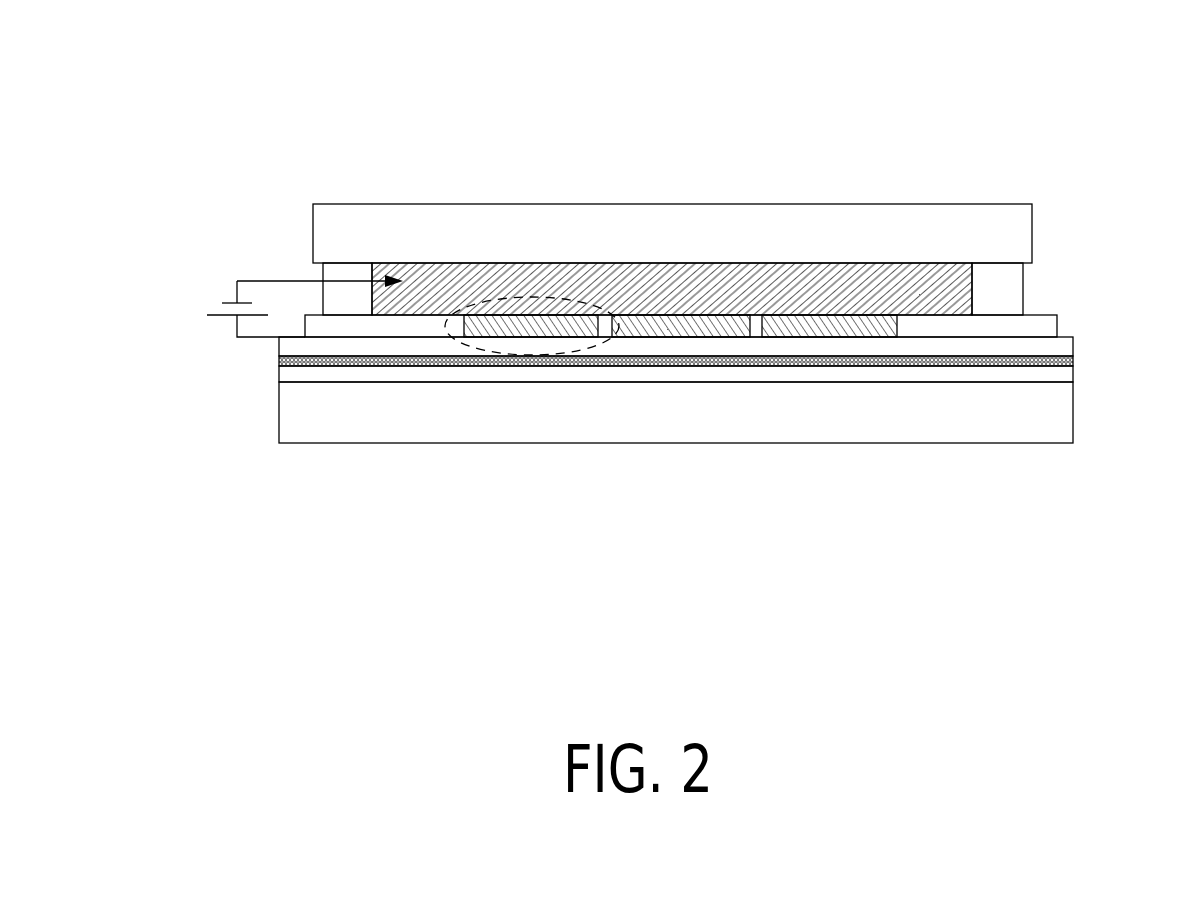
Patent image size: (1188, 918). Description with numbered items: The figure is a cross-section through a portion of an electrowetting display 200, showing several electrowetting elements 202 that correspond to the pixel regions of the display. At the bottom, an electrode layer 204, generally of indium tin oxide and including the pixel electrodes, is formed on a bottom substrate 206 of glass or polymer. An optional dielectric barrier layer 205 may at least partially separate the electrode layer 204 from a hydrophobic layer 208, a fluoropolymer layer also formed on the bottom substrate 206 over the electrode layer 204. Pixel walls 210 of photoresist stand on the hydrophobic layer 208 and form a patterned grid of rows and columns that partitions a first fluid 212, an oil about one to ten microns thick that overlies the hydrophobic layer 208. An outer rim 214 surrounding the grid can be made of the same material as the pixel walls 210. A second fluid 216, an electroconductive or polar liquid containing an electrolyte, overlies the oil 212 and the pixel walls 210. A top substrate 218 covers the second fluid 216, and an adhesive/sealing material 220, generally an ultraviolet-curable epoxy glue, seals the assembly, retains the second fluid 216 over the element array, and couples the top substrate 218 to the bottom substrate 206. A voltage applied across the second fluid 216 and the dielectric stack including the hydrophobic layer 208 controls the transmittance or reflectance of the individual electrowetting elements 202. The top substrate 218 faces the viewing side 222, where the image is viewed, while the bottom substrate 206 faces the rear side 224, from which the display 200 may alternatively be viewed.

The electrowetting display 200 is at (874, 52).
The electrowetting element 202 is at (537, 337).
The electrode layer 204 is at (278, 371).
The dielectric barrier layer 205 is at (1073, 361).
The bottom substrate 206 is at (349, 416).
The hydrophobic layer 208 is at (277, 344).
The pixel walls 210 is at (753, 337).
The first fluid 212 is at (812, 337).
The outer rim 214 is at (990, 337).
The second fluid 216 is at (738, 263).
The top substrate 218 is at (381, 242).
The adhesive/sealing material 220 is at (1023, 287).
The viewing side 222 is at (492, 148).
The rear side 224 is at (466, 466).